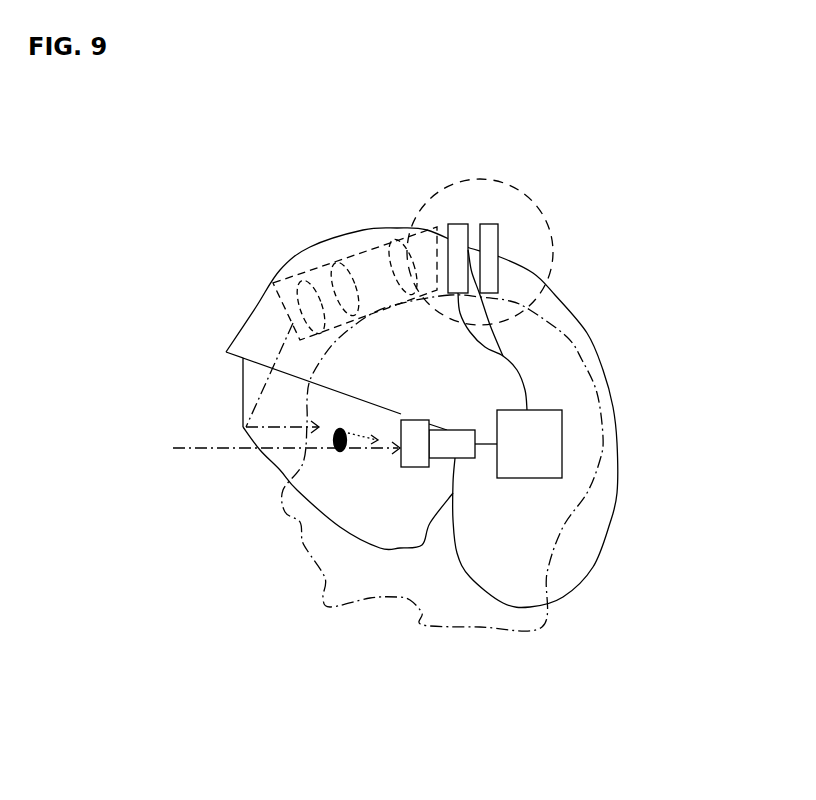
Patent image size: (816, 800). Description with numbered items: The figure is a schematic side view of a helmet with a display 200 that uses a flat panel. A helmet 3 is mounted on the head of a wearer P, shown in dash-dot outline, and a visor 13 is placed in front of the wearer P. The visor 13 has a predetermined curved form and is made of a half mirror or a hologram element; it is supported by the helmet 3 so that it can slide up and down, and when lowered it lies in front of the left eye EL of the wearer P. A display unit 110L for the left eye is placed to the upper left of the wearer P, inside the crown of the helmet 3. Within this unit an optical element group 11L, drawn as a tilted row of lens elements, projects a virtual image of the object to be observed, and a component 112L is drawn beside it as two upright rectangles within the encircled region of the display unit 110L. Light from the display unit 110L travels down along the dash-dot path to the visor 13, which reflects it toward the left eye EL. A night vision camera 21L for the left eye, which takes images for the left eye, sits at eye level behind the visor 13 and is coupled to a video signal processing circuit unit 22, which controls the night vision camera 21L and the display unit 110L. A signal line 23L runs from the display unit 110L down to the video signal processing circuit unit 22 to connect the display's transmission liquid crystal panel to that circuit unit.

The helmet with a display 200 is at (647, 180).
The display unit for the left eye 110L is at (450, 97).
The optical element group 11L is at (370, 267).
The left image display element 112L is at (447, 183).
The visor 13 is at (243, 398).
The night vision camera for the left eye 21L is at (413, 455).
The video signal processing circuit unit 22 is at (545, 428).
The signal line 23L is at (520, 375).
The helmet 3 is at (497, 565).
The left eye EL is at (353, 447).
The wearer P is at (350, 572).